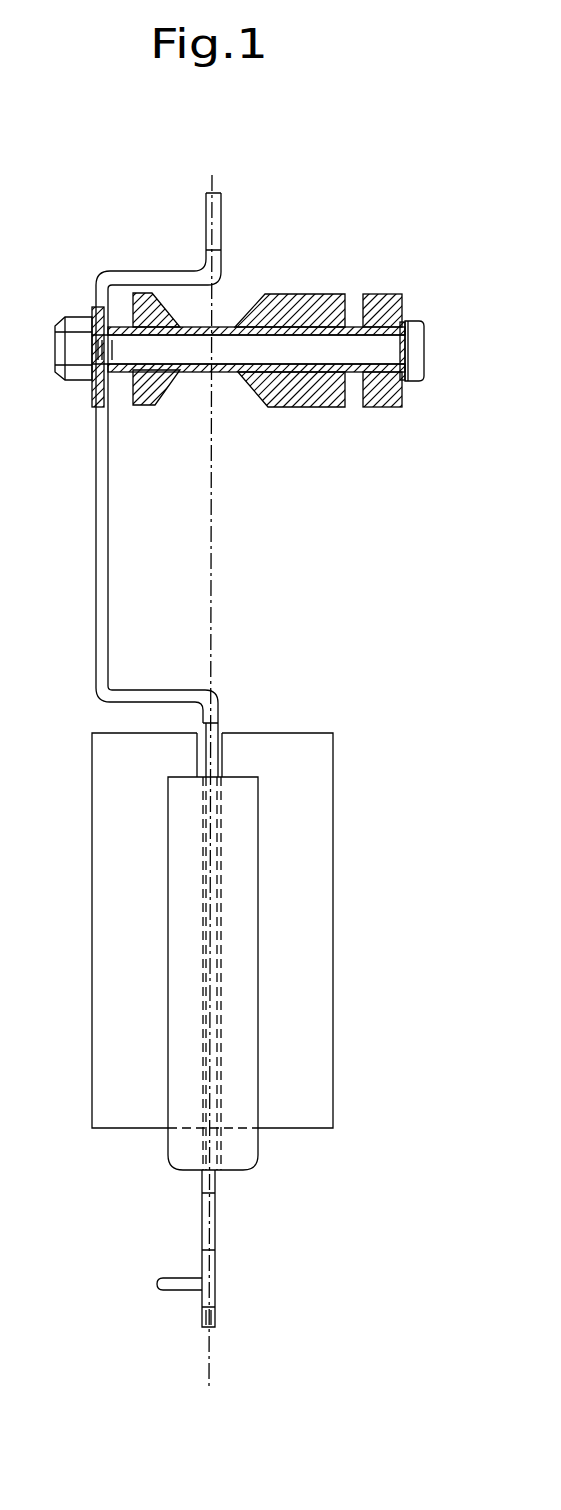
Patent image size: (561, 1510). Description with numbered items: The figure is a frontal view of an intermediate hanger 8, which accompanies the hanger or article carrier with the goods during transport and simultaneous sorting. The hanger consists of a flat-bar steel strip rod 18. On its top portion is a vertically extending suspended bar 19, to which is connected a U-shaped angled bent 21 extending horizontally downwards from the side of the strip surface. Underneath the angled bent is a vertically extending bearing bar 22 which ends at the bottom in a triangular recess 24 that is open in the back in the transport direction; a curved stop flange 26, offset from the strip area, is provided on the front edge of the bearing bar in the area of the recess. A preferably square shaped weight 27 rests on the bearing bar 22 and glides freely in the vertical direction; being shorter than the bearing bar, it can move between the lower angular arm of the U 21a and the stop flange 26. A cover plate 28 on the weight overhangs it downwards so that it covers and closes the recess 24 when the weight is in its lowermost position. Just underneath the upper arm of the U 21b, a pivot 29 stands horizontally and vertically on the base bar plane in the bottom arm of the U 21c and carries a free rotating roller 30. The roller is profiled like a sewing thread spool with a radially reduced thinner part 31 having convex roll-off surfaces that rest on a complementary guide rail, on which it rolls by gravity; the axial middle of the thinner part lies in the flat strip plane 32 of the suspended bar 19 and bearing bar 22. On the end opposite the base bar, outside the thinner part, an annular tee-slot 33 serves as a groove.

The intermediate hanger 8 is at (279, 304).
The flat-bar steel strip rod 18 is at (92, 501).
The suspended bar 19 is at (205, 192).
The angled bent 21 is at (149, 418).
The lower angular arm of the U 21a is at (167, 691).
The upper arm of the U 21b is at (146, 270).
The bottom arm of the U 21c is at (59, 486).
The bearing bar 22 is at (210, 748).
The triangular recess 24 is at (215, 1291).
The stop flange 26 is at (167, 1279).
The weight 27 is at (307, 908).
The cover plate 28 is at (245, 1145).
The pivot 29 is at (289, 350).
The roller 30 is at (305, 385).
The thinner part 31 is at (202, 384).
The flat strip plane 32 is at (213, 496).
The annular tee-slot 33 is at (355, 330).